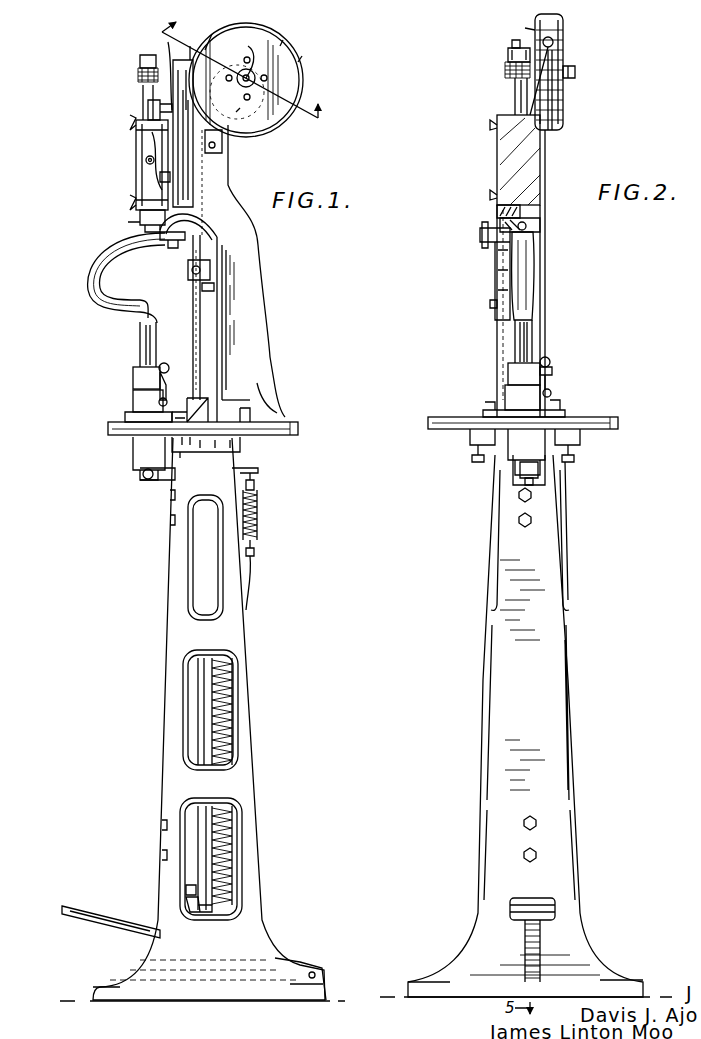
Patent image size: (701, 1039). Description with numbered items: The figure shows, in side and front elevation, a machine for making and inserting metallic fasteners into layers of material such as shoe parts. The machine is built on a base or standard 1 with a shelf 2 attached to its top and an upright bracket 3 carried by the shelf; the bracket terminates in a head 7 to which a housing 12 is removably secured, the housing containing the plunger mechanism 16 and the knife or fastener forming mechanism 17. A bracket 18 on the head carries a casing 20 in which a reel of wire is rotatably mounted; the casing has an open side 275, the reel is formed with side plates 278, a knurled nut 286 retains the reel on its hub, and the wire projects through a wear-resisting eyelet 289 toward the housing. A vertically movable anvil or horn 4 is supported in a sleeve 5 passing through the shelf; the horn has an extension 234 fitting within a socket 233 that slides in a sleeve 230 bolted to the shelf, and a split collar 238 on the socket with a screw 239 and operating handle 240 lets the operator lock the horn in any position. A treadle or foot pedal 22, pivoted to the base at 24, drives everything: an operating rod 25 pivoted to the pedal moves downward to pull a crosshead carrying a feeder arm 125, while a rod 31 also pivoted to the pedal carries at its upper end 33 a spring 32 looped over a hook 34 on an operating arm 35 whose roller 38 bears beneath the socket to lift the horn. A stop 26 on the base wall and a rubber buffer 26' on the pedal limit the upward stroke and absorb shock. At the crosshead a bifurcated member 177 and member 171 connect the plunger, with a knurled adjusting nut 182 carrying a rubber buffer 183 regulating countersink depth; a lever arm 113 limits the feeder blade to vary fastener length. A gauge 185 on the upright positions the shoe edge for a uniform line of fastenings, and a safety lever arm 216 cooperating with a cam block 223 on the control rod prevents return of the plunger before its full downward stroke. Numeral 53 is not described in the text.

In FIG. 1, the base or standard 1 is at (170, 634).
In FIG. 2, the base or standard 1 is at (548, 636).
In FIG. 1, the shelf 2 is at (300, 428).
In FIG. 2, the shelf 2 is at (620, 421).
In FIG. 1, the bracket 3 is at (266, 321).
In FIG. 2, the bracket 3 is at (512, 176).
In FIG. 1, the anvil or horn 4 is at (96, 310).
In FIG. 2, the anvil or horn 4 is at (534, 268).
In FIG. 1, the sleeve 5 is at (132, 398).
In FIG. 2, the sleeve 5 is at (503, 393).
In FIG. 1, the head 7 is at (182, 182).
In FIG. 1, the housing or casing 12 is at (134, 170).
In FIG. 2, the housing or casing 12 is at (534, 174).
In FIG. 2, the plunger mechanism 16 is at (512, 96).
In FIG. 1, the knife or fastener forming mechanism 17 is at (136, 222).
In FIG. 2, the knife or fastener forming mechanism 17 is at (497, 200).
In FIG. 1, the bracket 18 is at (216, 145).
In FIG. 1, the casing 20 is at (304, 60).
In FIG. 2, the casing 20 is at (565, 38).
In FIG. 1, the treadle or foot pedal 22 is at (105, 922).
In FIG. 2, the treadle or foot pedal 22 is at (556, 906).
In FIG. 1, the pivot 24 is at (318, 970).
In FIG. 1, the operating rod 25 is at (193, 326).
In FIG. 1, the stop 26 is at (154, 883).
In FIG. 1, the buffer 26' is at (164, 902).
In FIG. 1, the rod 31 is at (252, 562).
In FIG. 1, the spring 32 is at (258, 516).
In FIG. 1, the spring connection 33 is at (256, 548).
In FIG. 1, the hook 34 is at (256, 482).
In FIG. 1, the operating arm 35 is at (258, 466).
In FIG. 2, the operating arm 35 is at (520, 468).
In FIG. 1, the roller 38 is at (143, 478).
In FIG. 2, the roller 38 is at (538, 466).
In FIG. 1, the rod 53 is at (143, 102).
In FIG. 1, the lever arm 113 is at (148, 116).
In FIG. 1, the feeder arm 125 is at (190, 88).
In FIG. 1, the member 171 is at (243, 112).
In FIG. 1, the bifurcated member 177 is at (140, 60).
In FIG. 2, the bifurcated member 177 is at (508, 54).
In FIG. 1, the knurled adjusting nut 182 is at (137, 76).
In FIG. 2, the knurled adjusting nut 182 is at (505, 70).
In FIG. 2, the rubber buffer 183 is at (518, 46).
In FIG. 1, the gauge or regulating device 185 is at (182, 243).
In FIG. 2, the gauge or regulating device 185 is at (494, 234).
In FIG. 1, the lever arm 216 is at (212, 272).
In FIG. 1, the cam block 223 is at (165, 58).
In FIG. 1, the sleeve 230 is at (112, 395).
In FIG. 2, the sleeve 230 is at (553, 392).
In FIG. 1, the socket 233 is at (133, 458).
In FIG. 2, the socket 233 is at (512, 455).
In FIG. 1, the extension 234 is at (140, 341).
In FIG. 1, the split collar 238 is at (133, 374).
In FIG. 2, the split collar 238 is at (508, 372).
In FIG. 2, the screw 239 is at (518, 338).
In FIG. 1, the operating handle 240 is at (166, 364).
In FIG. 2, the operating handle 240 is at (551, 360).
In FIG. 1, the open side 275 is at (300, 52).
In FIG. 2, the open side 275 is at (514, 27).
In FIG. 1, the side plates 278 is at (282, 38).
In FIG. 1, the knurled nut 286 is at (254, 55).
In FIG. 2, the knurled nut 286 is at (577, 72).
In FIG. 1, the eyelet 289 is at (212, 34).
In FIG. 2, the eyelet 289 is at (554, 44).